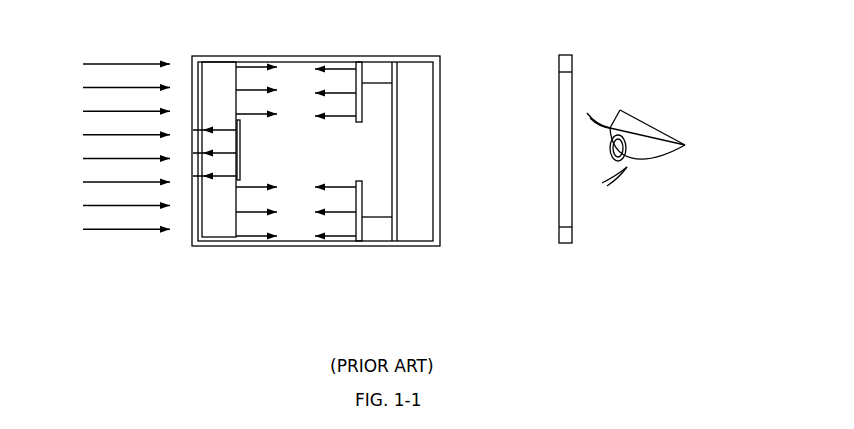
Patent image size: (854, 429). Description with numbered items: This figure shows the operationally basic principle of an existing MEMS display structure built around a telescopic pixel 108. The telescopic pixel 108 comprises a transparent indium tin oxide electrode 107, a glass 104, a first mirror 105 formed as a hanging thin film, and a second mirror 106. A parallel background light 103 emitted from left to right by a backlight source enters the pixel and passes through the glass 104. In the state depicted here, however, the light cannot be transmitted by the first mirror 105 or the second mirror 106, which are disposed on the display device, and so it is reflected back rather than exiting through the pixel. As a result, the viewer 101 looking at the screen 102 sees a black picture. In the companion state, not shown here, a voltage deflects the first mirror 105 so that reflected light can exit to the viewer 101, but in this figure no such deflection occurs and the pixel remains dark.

The viewer 101 is at (642, 112).
The screen 102 is at (573, 53).
The parallel background light 103 is at (126, 162).
The glass 104 is at (219, 241).
The first mirror 105 is at (361, 62).
The second mirror 106 is at (245, 143).
The transparent ITO electrode 107 is at (395, 241).
The telescopic pixel 108 is at (297, 54).